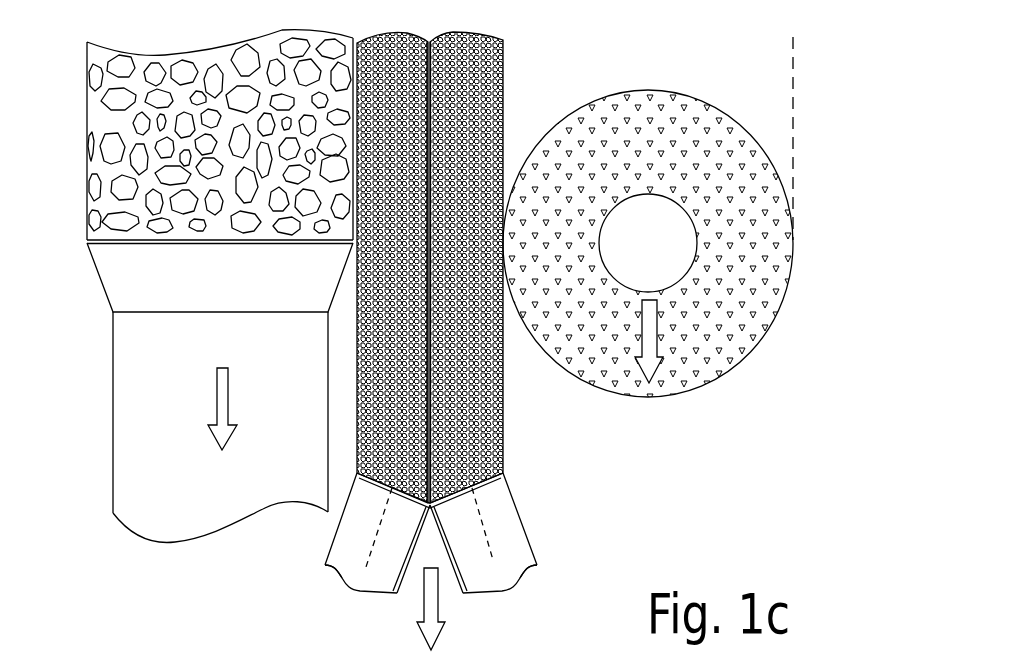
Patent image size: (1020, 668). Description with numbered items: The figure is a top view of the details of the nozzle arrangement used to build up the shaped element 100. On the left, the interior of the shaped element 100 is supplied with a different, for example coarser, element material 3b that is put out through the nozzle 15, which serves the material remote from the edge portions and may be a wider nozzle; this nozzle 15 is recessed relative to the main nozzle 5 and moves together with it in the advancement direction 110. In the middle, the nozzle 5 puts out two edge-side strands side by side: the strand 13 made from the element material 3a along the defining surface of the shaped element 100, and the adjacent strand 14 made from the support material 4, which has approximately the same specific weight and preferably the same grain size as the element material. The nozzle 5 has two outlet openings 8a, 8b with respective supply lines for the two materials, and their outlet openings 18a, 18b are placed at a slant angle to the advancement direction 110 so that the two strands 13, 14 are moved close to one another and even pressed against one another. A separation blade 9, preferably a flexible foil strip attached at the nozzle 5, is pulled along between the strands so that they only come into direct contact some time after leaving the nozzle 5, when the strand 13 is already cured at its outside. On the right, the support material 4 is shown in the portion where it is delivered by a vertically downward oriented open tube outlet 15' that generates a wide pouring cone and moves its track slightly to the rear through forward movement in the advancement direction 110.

The shaped element 100 is at (198, 124).
The element material 3b is at (120, 133).
The nozzle 15 is at (220, 277).
The advancement direction 110 is at (222, 407).
The element material 3a is at (385, 251).
The strand 13 is at (392, 62).
The support material 4 is at (611, 251).
The strand 14 is at (472, 62).
The central outlet 15' is at (648, 288).
The separation blade 9 is at (433, 395).
The nozzle 5 is at (430, 519).
The outlet opening 8b is at (377, 538).
The outlet opening 8a is at (498, 538).
The outlet opening 18b is at (366, 553).
The outlet opening 18a is at (507, 573).